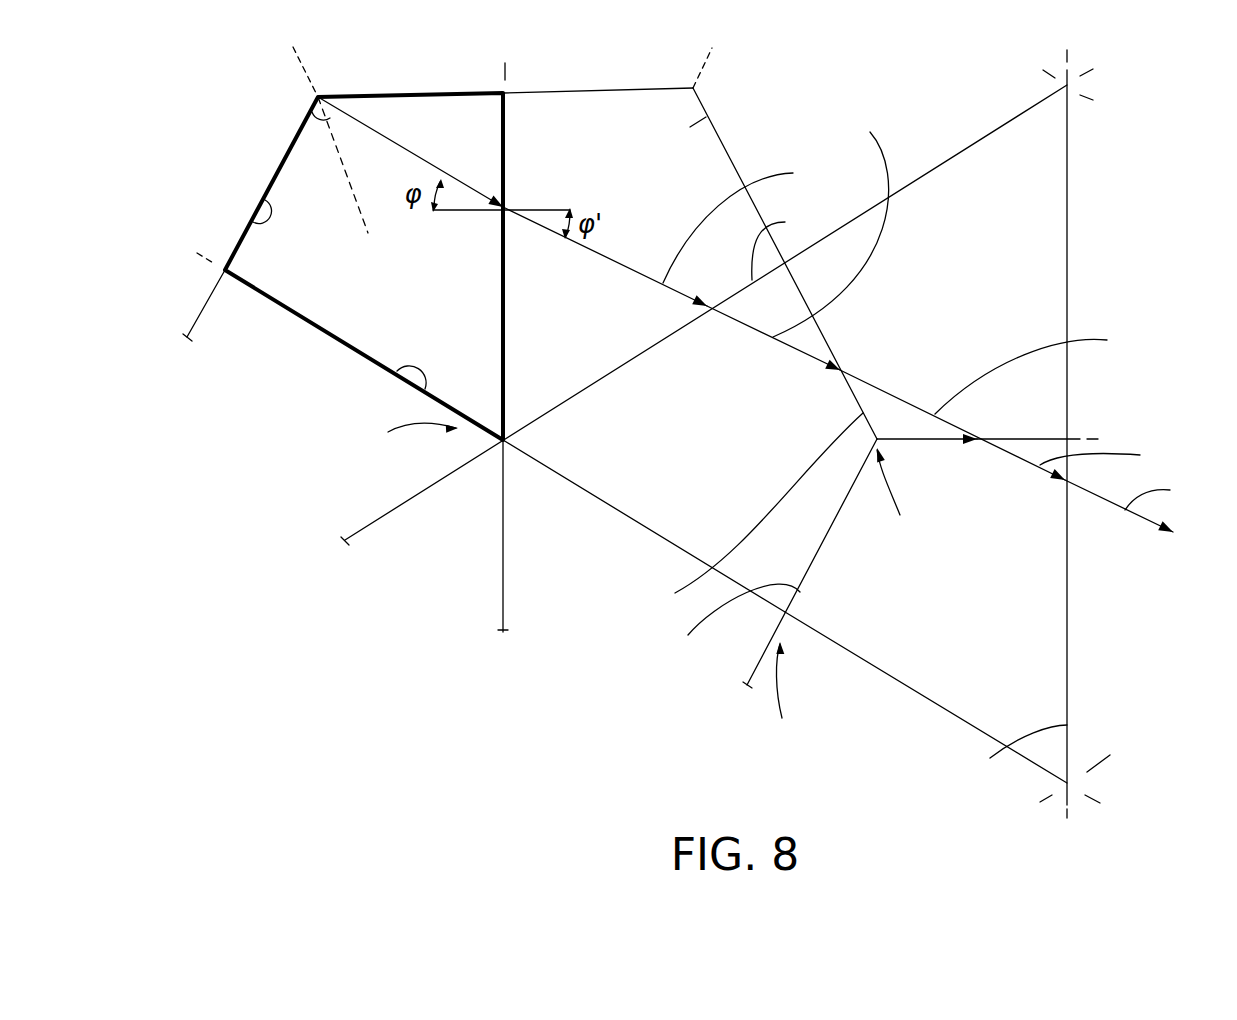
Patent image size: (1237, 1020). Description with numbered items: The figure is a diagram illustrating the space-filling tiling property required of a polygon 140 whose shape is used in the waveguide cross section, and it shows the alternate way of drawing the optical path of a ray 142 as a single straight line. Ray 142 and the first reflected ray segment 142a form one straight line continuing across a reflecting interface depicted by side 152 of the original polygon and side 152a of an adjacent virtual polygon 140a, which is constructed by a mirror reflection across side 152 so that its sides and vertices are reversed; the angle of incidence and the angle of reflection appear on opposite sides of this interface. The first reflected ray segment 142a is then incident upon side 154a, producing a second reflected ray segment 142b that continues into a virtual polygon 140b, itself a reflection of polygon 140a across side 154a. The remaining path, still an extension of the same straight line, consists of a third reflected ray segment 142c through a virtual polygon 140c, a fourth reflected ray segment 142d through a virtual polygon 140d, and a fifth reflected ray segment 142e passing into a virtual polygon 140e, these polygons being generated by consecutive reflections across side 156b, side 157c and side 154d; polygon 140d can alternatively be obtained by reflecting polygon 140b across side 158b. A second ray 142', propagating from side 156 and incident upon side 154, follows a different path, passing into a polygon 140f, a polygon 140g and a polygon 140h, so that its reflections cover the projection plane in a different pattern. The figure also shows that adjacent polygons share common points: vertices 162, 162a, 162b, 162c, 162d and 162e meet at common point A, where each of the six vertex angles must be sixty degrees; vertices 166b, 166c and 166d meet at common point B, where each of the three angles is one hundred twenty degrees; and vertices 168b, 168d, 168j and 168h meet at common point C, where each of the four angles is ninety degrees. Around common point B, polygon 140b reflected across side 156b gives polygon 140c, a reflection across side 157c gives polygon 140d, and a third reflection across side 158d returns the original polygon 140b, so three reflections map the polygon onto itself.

The polygon 140 is at (374, 330).
The virtual polygon 140a is at (695, 124).
The virtual polygon 140b is at (689, 530).
The virtual polygon 140c is at (1050, 272).
The virtual polygon 140d is at (933, 678).
The virtual polygon 140e is at (1100, 723).
The polygon 140f is at (210, 314).
The polygon 140g is at (393, 526).
The polygon 140h is at (517, 583).
The ray 142 is at (366, 146).
The second ray 142' is at (289, 165).
The first reflected ray segment 142a is at (793, 173).
The second reflected ray segment 142b is at (801, 243).
The third reflected ray segment 142c is at (995, 405).
The fourth reflected ray segment 142d is at (1114, 457).
The fifth reflected ray segment 142e is at (1142, 506).
The side 152 is at (503, 100).
The side 152a is at (503, 110).
The side 154 is at (393, 376).
The side 154a is at (798, 241).
The side 154d is at (1002, 750).
The side 156 is at (256, 212).
The side 156b is at (743, 513).
The side 157c is at (1027, 437).
The side 158b is at (721, 621).
The side 158d is at (833, 527).
The vertex 162 is at (492, 420).
The vertex 162a is at (513, 423).
The vertex 162b is at (520, 441).
The vertex 162c is at (513, 460).
The vertex 162d is at (498, 460).
The vertex 162e is at (487, 442).
The vertex 166b is at (865, 440).
The vertex 166c is at (887, 427).
The vertex 166d is at (887, 447).
The vertex 168b is at (785, 587).
The vertex 168d is at (797, 605).
The vertex 168h is at (775, 613).
The vertex 168j is at (788, 620).
The common point A is at (416, 436).
The common point B is at (898, 490).
The common point C is at (786, 692).